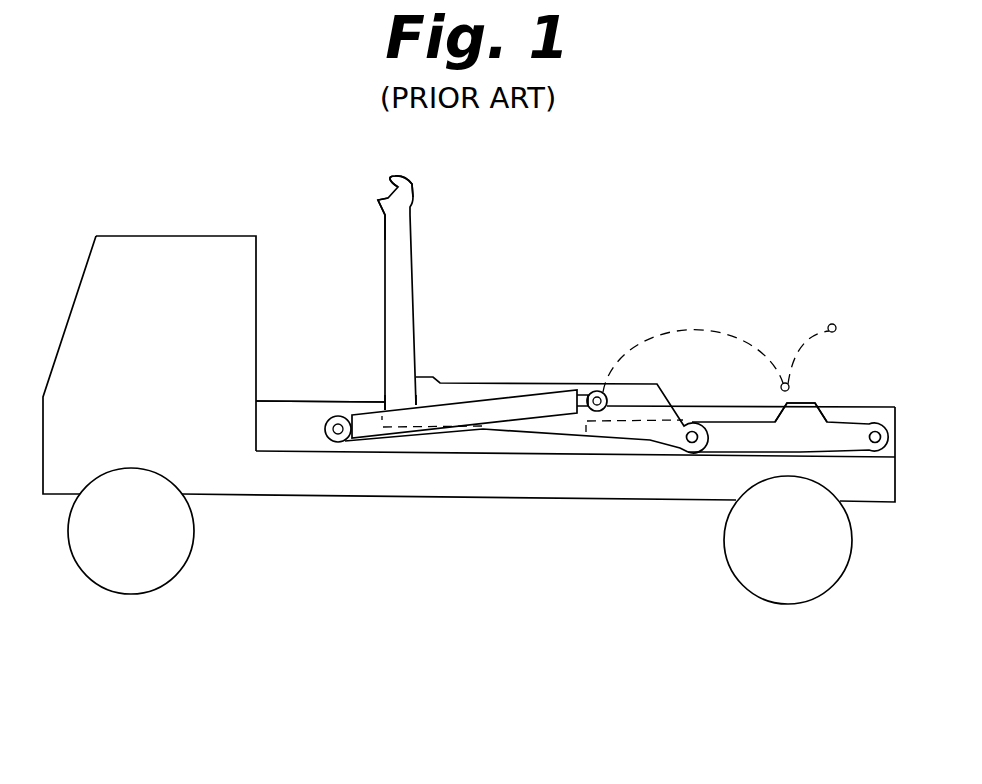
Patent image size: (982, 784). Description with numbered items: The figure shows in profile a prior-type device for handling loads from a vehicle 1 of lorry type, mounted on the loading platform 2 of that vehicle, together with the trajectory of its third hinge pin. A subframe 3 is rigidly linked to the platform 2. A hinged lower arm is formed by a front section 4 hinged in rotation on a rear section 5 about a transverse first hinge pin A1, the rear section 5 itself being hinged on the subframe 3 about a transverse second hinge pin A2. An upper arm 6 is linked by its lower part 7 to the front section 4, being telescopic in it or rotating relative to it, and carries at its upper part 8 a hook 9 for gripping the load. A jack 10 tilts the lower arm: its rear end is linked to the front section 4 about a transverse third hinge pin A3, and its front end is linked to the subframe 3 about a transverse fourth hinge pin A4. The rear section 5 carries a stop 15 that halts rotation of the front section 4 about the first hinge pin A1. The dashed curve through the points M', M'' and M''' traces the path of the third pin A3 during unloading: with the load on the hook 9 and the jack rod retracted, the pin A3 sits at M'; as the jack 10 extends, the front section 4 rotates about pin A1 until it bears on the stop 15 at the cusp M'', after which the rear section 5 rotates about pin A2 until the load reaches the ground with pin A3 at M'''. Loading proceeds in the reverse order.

The vehicle 1 is at (190, 250).
The loading platform 2 is at (257, 483).
The subframe 3 is at (273, 410).
The front section 4 is at (450, 393).
The rear section 5 is at (860, 430).
The upper arm 6 is at (411, 292).
The lower part 7 is at (384, 398).
The upper part 8 is at (385, 218).
The hook 9 is at (405, 180).
The jack 10 is at (377, 437).
The stop 15 is at (815, 420).
The first hinge pin A1 is at (692, 446).
The second hinge pin A2 is at (876, 450).
The third hinge pin A3 is at (590, 393).
The fourth hinge pin A4 is at (336, 443).
The position M' is at (687, 342).
The point M" M'' is at (793, 338).
The position M'" M''' is at (819, 316).